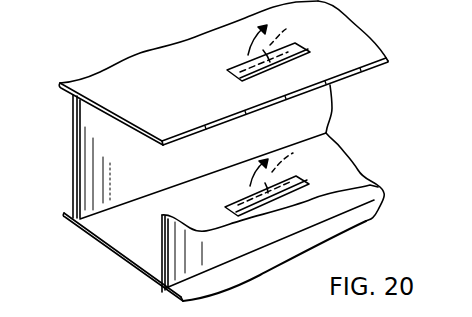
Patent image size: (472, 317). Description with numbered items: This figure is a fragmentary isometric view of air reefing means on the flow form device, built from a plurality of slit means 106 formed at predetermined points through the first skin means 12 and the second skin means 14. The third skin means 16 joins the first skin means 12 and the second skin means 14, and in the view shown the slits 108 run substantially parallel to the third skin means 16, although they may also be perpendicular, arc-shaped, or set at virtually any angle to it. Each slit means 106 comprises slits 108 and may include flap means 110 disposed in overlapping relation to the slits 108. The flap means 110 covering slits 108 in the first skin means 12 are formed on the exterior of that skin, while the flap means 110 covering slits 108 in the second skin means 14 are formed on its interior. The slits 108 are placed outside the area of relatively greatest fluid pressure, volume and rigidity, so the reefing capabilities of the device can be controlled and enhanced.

The first skin means 12 is at (110, 65).
The second skin means 14 is at (113, 233).
The third skin means 16 is at (73, 138).
The slit means 106 is at (226, 57).
The slits 108 is at (291, 101).
The flap means 110 is at (240, 77).